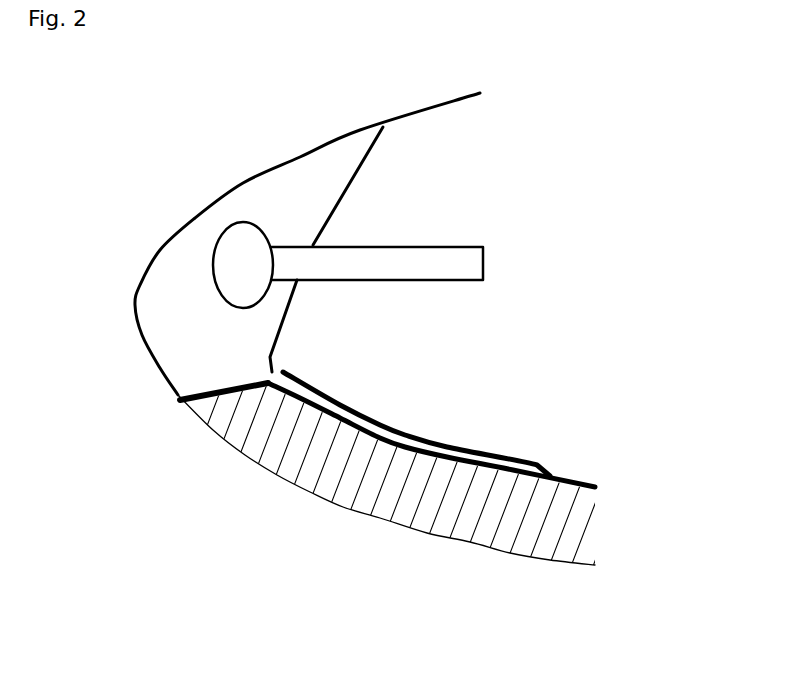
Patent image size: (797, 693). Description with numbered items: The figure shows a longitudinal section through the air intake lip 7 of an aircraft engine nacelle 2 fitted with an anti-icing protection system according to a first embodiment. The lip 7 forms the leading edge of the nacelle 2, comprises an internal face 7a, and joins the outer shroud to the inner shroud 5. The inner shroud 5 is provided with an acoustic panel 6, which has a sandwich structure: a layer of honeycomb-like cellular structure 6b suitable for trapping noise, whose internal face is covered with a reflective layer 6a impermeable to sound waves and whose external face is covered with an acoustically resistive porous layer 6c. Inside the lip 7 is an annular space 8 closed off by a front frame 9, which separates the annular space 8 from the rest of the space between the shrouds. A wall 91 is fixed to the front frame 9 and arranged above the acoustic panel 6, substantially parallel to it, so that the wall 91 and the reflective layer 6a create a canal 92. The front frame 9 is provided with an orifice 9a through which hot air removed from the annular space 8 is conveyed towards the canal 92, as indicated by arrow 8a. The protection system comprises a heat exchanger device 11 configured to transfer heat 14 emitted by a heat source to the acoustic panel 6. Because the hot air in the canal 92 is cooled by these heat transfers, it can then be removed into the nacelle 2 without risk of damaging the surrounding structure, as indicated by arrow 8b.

The nacelle 2 is at (545, 210).
The inner shroud 5 is at (434, 562).
The acoustic panel 6 is at (618, 552).
The reflective layer 6a is at (387, 418).
The honeycomb-like cellular structure 6b is at (373, 484).
The acoustically resistive porous layer 6c is at (266, 477).
The air intake lip 7 is at (111, 297).
The internal face 7a is at (168, 383).
The annular space 8 is at (280, 222).
The arrow 8a is at (258, 360).
The arrow 8b is at (550, 470).
The front frame 9 is at (335, 212).
The orifice 9a is at (260, 368).
The wall 91 is at (470, 452).
The canal 92 is at (323, 388).
The heat exchanger device 11 is at (292, 500).
The heat 14 is at (215, 297).